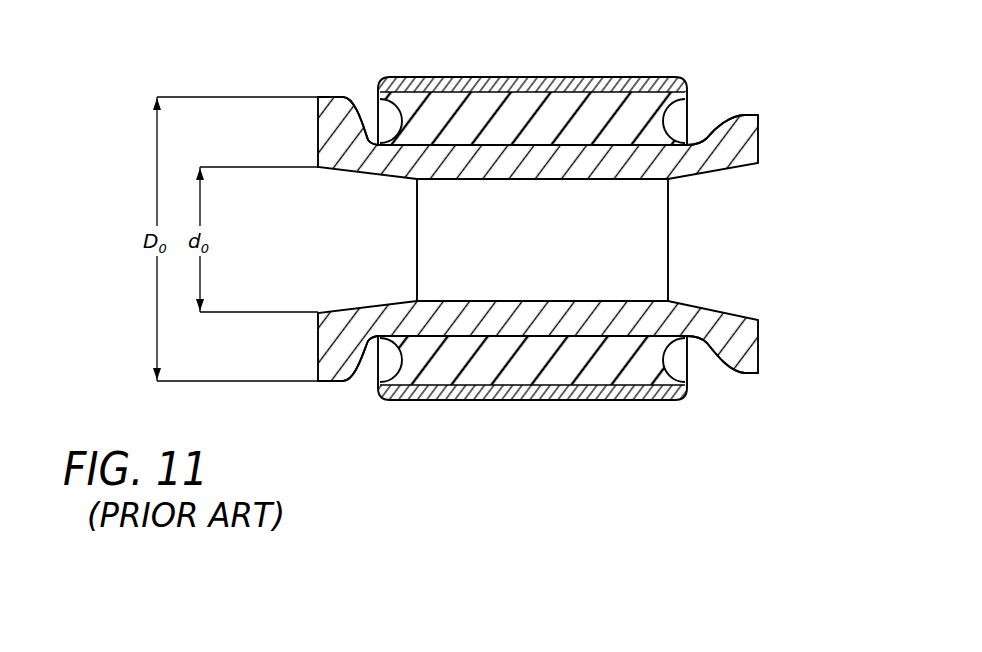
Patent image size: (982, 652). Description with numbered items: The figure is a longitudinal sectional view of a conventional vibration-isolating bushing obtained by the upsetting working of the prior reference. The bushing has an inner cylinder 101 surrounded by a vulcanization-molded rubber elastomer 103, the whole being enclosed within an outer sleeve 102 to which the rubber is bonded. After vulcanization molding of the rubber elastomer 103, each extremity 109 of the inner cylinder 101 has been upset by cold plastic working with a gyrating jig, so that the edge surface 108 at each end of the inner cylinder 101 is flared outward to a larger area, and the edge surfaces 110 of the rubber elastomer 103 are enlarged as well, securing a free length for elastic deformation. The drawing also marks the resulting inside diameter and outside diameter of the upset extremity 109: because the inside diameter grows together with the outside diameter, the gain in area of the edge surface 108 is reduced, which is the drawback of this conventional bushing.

The inner cylinder 101 is at (443, 323).
The outer sleeve 102 is at (468, 77).
The rubber elastomer 103 is at (548, 362).
The edge surface 108 is at (318, 127).
The extremity 109 is at (318, 350).
The edge surface of the rubber elastomer 110 is at (395, 360).